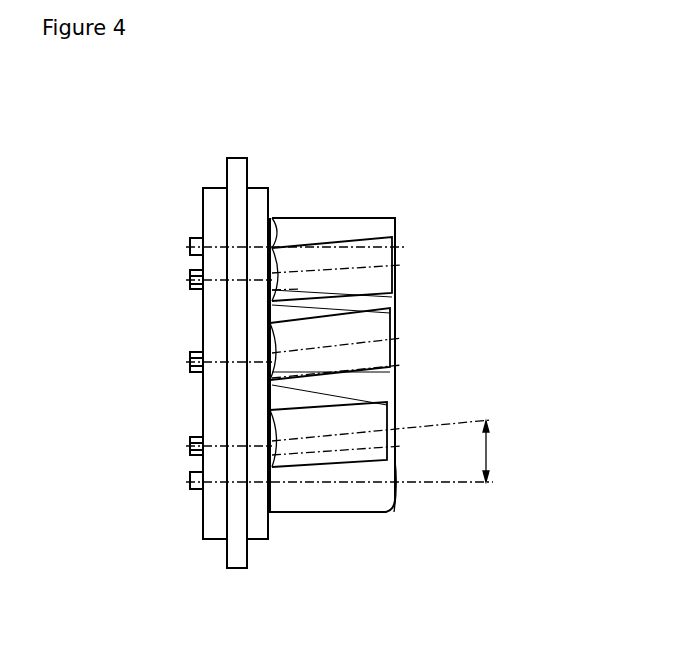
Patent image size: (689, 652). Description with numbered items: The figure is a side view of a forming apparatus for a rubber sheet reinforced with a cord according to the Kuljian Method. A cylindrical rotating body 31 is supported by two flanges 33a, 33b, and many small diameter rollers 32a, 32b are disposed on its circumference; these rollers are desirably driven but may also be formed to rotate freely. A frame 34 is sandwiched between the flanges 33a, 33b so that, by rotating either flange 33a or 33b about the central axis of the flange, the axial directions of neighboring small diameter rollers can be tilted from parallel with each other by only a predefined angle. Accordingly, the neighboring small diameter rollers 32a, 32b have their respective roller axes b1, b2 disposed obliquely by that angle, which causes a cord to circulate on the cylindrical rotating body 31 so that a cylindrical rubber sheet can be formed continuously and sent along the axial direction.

The cylindrical rotating body 31 is at (402, 275).
The small diameter roller 32a is at (367, 512).
The small diameter roller 32b is at (398, 413).
The flange 33a is at (268, 205).
The flange 33b is at (203, 213).
The frame 34 is at (226, 172).
The roller axis b1 is at (418, 487).
The roller axis b2 is at (413, 425).